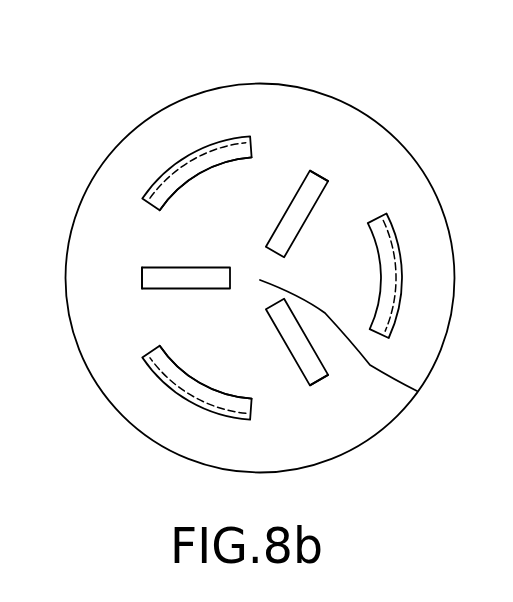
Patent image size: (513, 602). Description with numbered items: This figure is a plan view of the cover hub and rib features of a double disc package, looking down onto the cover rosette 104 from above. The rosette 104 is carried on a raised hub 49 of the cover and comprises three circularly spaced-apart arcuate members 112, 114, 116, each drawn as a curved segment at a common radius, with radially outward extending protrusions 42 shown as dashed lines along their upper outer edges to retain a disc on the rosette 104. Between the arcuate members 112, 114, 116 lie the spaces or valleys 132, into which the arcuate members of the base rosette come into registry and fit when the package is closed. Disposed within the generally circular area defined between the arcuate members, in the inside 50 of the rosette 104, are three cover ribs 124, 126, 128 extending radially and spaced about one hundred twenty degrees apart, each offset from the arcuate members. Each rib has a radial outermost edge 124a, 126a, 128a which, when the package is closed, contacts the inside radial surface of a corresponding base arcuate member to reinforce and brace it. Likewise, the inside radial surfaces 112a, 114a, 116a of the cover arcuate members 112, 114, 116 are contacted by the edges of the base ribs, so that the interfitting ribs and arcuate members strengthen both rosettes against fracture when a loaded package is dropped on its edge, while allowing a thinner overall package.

The radially outward extending protrusion 42 is at (210, 151).
The raised hub 49 is at (403, 188).
The inside of the rosette 50 is at (417, 391).
The rosette 104 is at (184, 121).
The arcuate member 112 is at (190, 154).
The inside radial surface 112a is at (197, 177).
The arcuate member 114 is at (385, 259).
The inside radial surface 114a is at (396, 262).
The arcuate member 116 is at (184, 398).
The inside radial surface 116a is at (177, 361).
The cover rib 124 is at (175, 272).
The radial outermost edge 124a is at (142, 270).
The cover rib 126 is at (302, 207).
The radial outermost edge 126a is at (320, 175).
The cover rib 128 is at (293, 342).
The radial outermost edge 128a is at (318, 386).
The space (valley) 132 is at (304, 156).